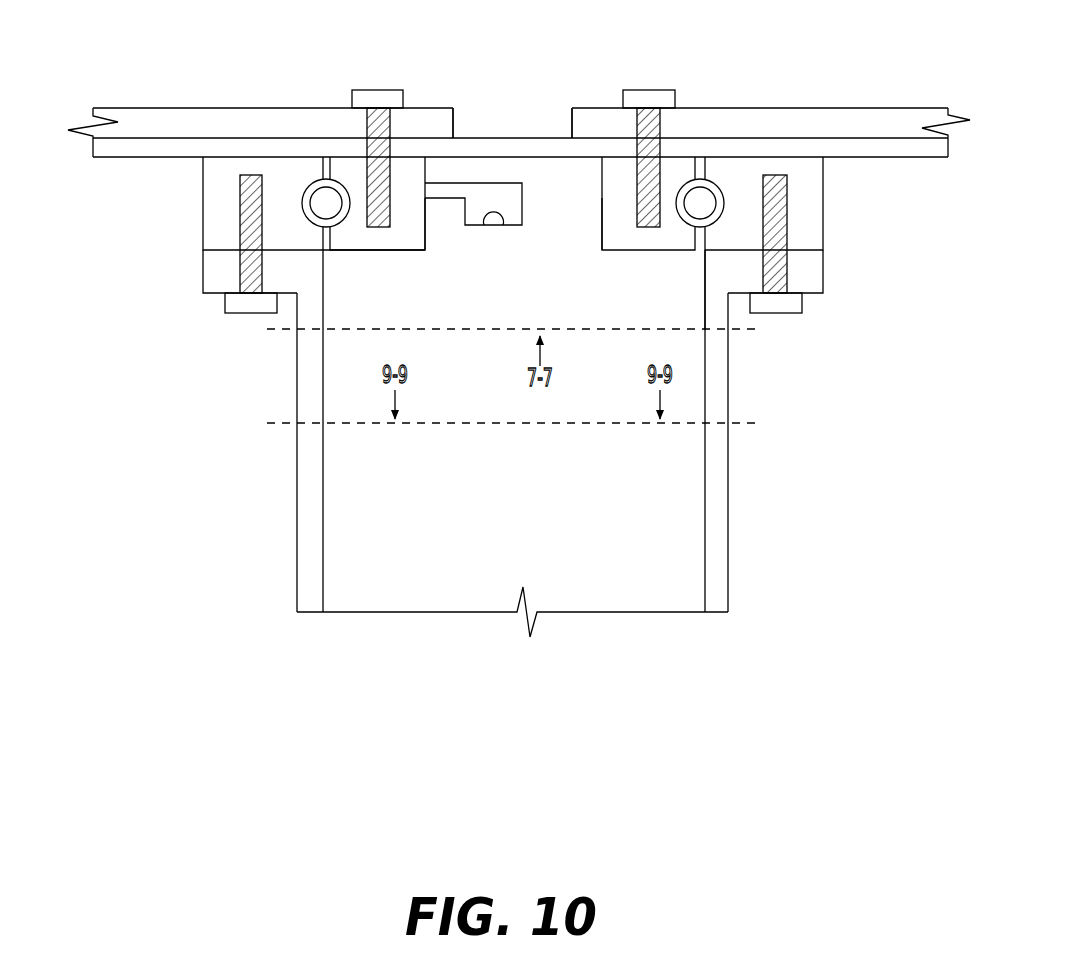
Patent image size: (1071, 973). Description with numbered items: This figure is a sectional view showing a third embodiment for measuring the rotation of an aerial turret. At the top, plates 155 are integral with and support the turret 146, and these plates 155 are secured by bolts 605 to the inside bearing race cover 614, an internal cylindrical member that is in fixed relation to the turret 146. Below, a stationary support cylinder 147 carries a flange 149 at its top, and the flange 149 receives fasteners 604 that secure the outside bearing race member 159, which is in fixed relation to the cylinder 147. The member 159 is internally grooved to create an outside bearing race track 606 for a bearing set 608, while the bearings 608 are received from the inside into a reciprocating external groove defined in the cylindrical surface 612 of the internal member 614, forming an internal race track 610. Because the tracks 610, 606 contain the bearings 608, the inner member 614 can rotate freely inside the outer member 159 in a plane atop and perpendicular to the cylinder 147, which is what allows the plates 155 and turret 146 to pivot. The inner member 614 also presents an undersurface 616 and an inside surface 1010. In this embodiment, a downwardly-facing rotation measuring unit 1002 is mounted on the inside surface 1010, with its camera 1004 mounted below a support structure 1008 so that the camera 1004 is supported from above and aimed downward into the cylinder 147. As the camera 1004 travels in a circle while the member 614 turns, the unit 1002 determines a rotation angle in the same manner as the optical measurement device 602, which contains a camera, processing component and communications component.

The turret 146 is at (155, 122).
The plates 155 is at (107, 152).
The support structure 1008 is at (443, 195).
The bolts 605 is at (647, 88).
The cylindrical surface 612 is at (328, 167).
The fasteners 604 is at (243, 315).
The outside bearing race member 159 is at (215, 177).
The flange 149 is at (215, 277).
The inside bearing race cover 614 is at (415, 218).
The undersurface 616 is at (403, 252).
The internal race track 610 is at (327, 168).
The outside bearing race track 606 is at (332, 223).
The bearing set 608 is at (317, 205).
The cylinder 147 is at (290, 557).
The optical measurement device 602 is at (708, 282).
The rotation measuring unit 1002 is at (500, 180).
The camera 1004 is at (493, 217).
The inside surface 1010 is at (425, 212).